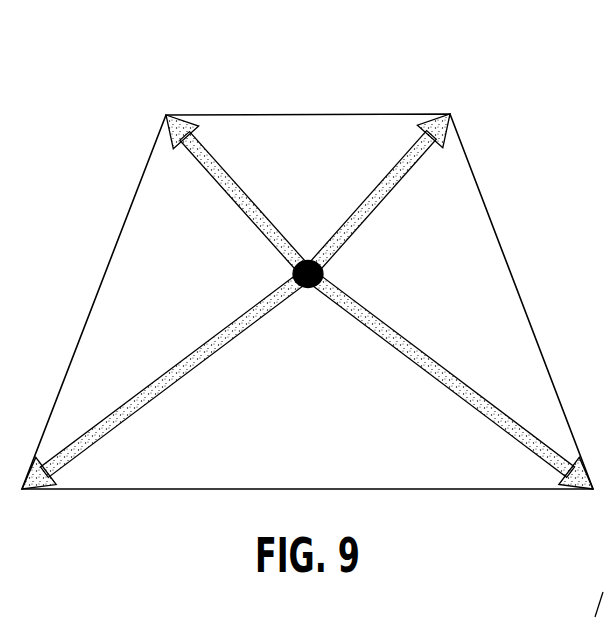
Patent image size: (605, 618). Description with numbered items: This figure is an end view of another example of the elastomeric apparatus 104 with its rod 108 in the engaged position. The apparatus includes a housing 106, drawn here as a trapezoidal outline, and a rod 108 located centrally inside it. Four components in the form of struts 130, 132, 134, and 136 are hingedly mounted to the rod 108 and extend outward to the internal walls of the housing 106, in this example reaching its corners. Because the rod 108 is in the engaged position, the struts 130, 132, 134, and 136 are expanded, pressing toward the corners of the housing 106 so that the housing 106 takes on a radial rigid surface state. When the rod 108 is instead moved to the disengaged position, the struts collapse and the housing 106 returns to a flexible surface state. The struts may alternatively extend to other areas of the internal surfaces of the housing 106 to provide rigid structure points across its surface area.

The elastomeric apparatus 104 is at (250, 58).
The housing 106 is at (215, 114).
The rod 108 is at (310, 262).
The strut 130 is at (252, 223).
The strut 132 is at (392, 182).
The strut 134 is at (192, 362).
The strut 136 is at (440, 372).